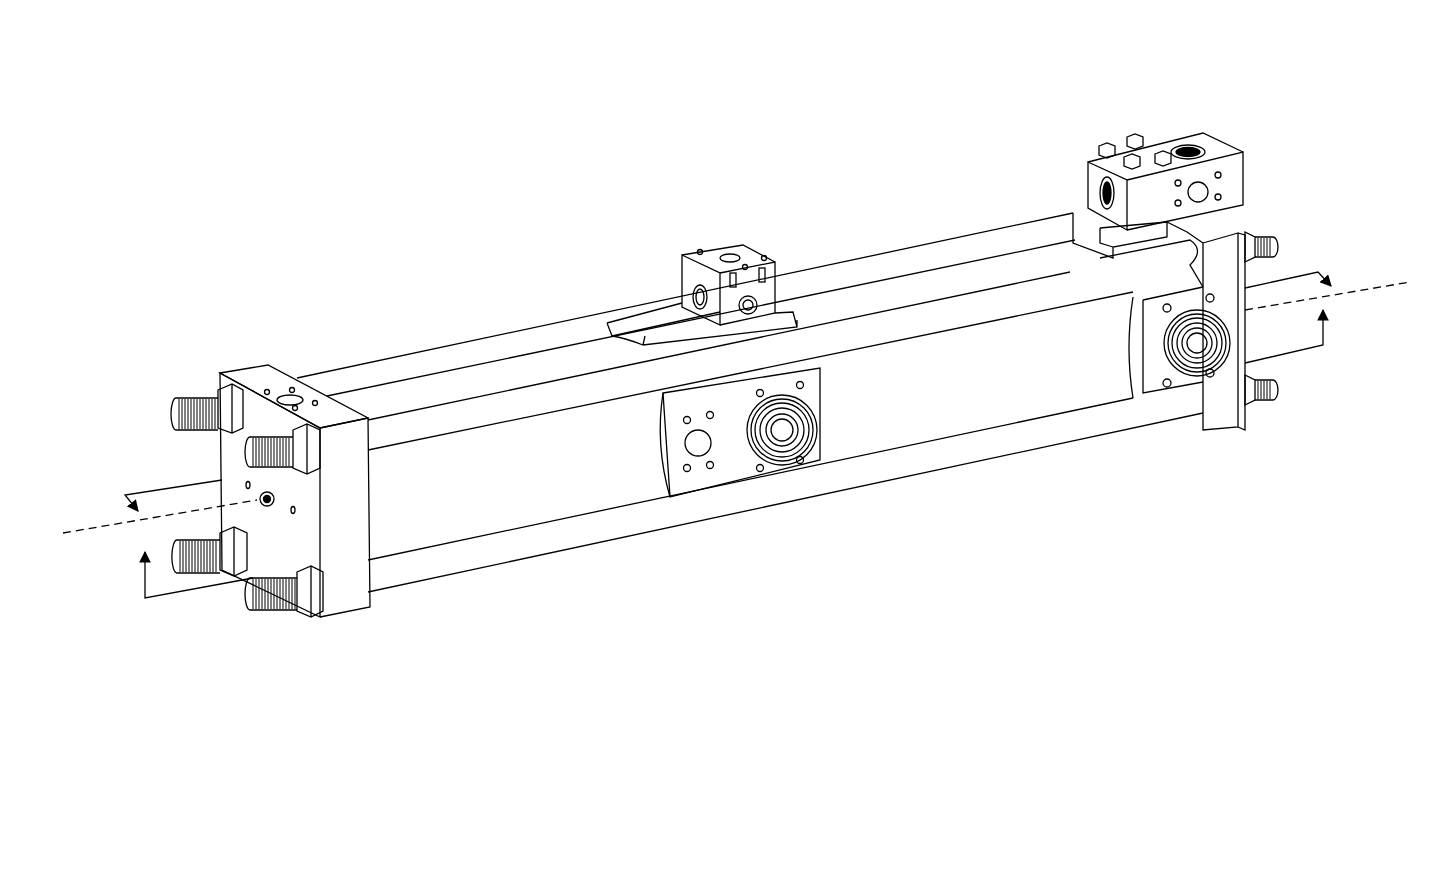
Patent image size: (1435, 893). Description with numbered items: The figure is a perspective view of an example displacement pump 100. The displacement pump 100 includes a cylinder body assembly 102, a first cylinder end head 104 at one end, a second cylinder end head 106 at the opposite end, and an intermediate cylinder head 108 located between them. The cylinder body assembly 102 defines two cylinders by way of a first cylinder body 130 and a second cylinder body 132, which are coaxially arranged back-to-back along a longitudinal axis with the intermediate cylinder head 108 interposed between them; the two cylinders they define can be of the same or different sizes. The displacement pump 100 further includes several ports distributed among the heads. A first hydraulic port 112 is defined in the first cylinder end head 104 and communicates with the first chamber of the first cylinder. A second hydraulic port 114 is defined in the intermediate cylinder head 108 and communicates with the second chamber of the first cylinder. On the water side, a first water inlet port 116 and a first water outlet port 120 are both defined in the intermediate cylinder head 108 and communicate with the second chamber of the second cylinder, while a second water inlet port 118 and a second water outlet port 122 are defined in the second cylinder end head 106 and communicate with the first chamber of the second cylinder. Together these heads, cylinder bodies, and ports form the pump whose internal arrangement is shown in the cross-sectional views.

The displacement pump 100 is at (203, 101).
The cylinder body assembly 102 is at (436, 241).
The first cylinder end head 104 is at (247, 378).
The second cylinder end head 106 is at (1223, 248).
The intermediate cylinder head 108 is at (670, 320).
The first hydraulic port 112 is at (290, 394).
The second hydraulic port 114 is at (697, 447).
The first water inlet port 116 is at (792, 430).
The second water inlet port 118 is at (1198, 350).
The first water outlet port 120 is at (731, 256).
The second water outlet port 122 is at (1195, 149).
The first cylinder body 130 is at (487, 379).
The second cylinder body 132 is at (940, 280).